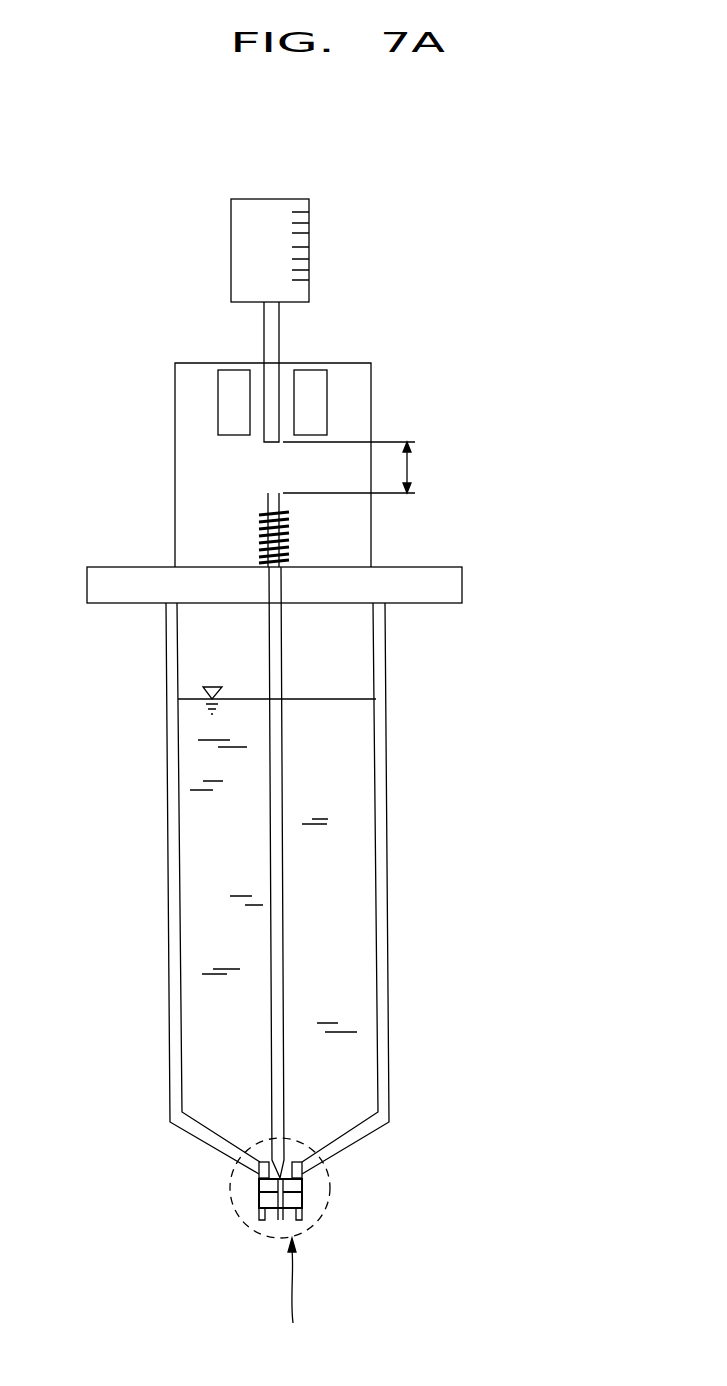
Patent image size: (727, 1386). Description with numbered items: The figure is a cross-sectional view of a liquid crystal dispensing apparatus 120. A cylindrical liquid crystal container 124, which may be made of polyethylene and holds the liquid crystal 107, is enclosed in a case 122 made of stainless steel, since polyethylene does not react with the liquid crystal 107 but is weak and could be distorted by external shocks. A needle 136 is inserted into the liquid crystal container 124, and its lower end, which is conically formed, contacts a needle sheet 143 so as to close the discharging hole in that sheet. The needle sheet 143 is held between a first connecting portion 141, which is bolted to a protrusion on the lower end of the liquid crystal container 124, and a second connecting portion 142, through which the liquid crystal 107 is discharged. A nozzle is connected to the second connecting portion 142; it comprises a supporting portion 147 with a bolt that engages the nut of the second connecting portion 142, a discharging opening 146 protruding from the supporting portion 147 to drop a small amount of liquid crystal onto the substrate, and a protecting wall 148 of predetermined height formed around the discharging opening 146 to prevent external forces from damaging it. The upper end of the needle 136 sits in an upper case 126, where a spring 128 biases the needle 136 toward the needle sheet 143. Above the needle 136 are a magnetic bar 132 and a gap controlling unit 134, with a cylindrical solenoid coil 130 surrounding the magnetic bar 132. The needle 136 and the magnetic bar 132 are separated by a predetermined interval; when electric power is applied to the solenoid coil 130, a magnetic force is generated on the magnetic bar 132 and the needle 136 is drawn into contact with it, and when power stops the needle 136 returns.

The liquid crystal dispensing apparatus 120 is at (408, 243).
The gap controlling unit 134 is at (250, 243).
The magnetic bar 132 is at (280, 337).
The upper case 126 is at (373, 407).
The solenoid coil 130 is at (232, 410).
The spring 128 is at (263, 533).
The needle 136 is at (283, 969).
The case 122 is at (387, 785).
The liquid crystal container 124 is at (377, 878).
The liquid crystal 107 is at (200, 853).
The first connecting portion 141 is at (262, 1162).
The needle sheet 143 is at (300, 1182).
The second connecting portion 142 is at (258, 1195).
The supporting portion 147 is at (293, 1203).
The discharging opening 146 is at (267, 1219).
The protecting wall 148 is at (299, 1220).